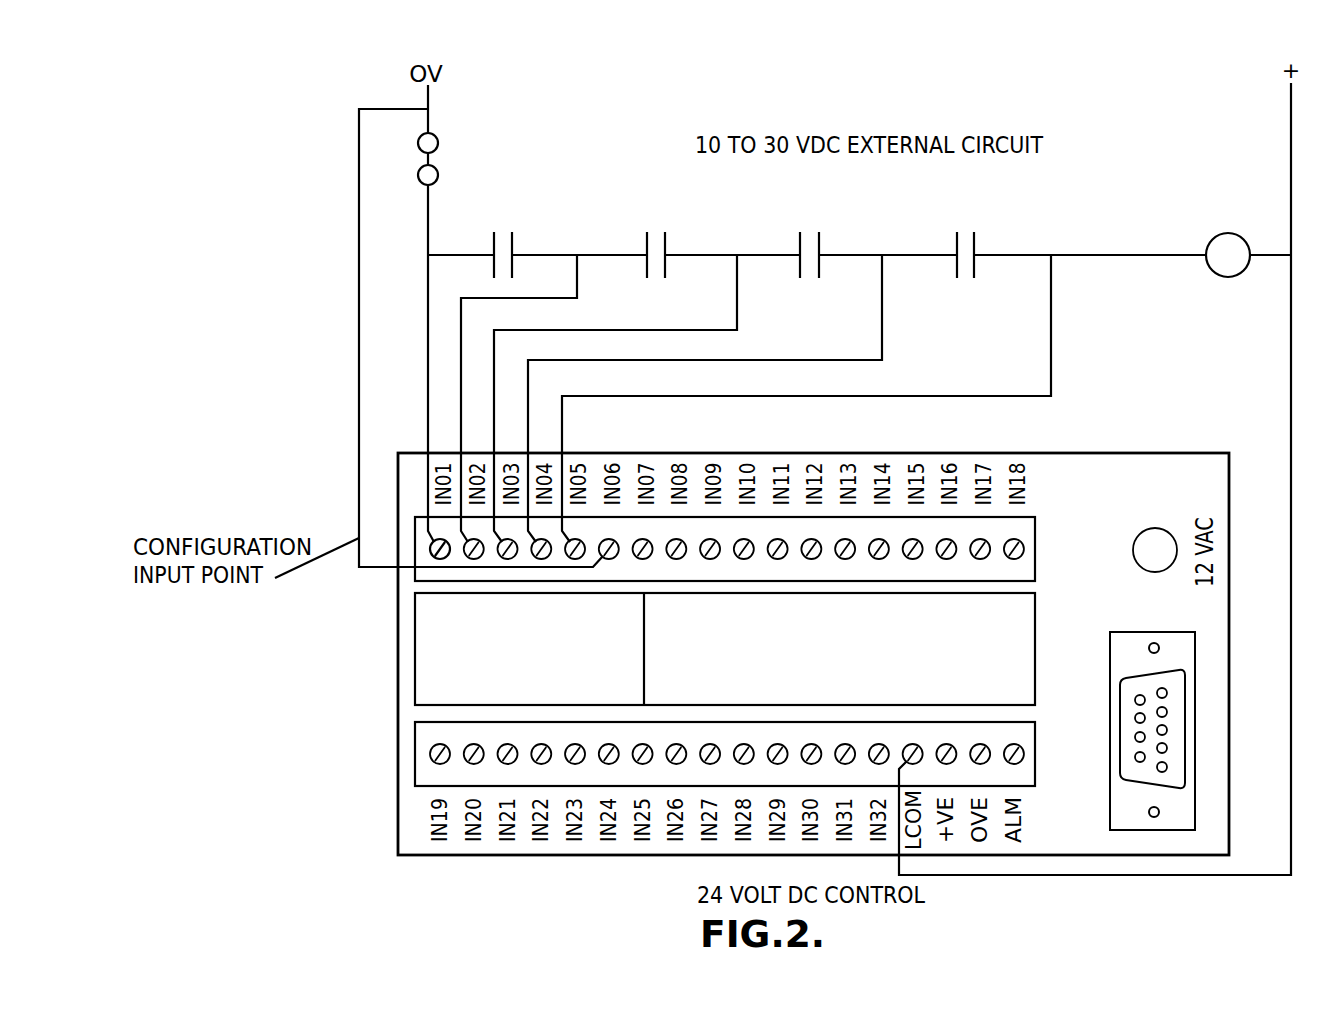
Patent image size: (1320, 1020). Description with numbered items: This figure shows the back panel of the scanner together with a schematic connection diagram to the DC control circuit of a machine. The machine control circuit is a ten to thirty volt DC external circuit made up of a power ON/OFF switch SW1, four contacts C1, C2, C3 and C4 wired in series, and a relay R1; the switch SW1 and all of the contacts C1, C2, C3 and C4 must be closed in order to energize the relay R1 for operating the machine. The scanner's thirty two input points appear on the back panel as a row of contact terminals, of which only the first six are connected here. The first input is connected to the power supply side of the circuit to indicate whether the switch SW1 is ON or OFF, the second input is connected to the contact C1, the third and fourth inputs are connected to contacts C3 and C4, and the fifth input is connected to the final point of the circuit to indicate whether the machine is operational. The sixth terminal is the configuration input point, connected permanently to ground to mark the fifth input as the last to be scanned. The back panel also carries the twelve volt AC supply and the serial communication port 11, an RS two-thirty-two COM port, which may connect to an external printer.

The serial communication port 11 is at (1172, 817).
The power ON/OFF switch SW1 is at (517, 160).
The contact C1 is at (502, 241).
The contact C2 is at (654, 241).
The contact C3 is at (807, 241).
The contact C4 is at (961, 241).
The relay R1 is at (1228, 255).